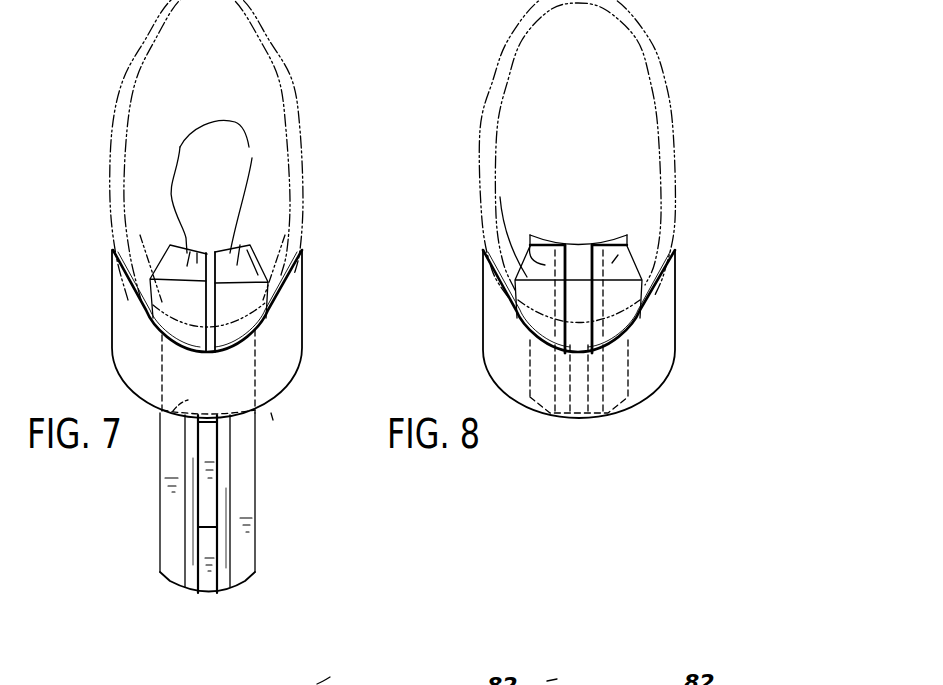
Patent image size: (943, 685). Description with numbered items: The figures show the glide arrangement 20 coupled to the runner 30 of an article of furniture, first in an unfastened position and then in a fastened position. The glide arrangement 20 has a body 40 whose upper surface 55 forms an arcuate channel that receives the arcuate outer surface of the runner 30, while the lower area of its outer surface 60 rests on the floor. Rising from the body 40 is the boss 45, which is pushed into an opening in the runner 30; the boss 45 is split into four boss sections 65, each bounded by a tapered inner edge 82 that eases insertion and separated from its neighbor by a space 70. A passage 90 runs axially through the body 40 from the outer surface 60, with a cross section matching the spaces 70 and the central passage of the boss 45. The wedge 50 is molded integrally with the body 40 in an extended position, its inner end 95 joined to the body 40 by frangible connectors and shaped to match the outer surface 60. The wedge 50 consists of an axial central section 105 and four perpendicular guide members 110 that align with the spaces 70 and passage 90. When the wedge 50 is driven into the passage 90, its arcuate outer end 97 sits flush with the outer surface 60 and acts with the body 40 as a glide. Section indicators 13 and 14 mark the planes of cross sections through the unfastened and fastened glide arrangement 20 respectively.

In FIG. 7, the glide arrangement 20 is at (293, 473).
In FIG. 8, the glide arrangement 20 is at (694, 381).
In FIG. 7, the runner 30 is at (312, 108).
In FIG. 8, the runner 30 is at (653, 41).
In FIG. 7, the body 40 is at (305, 330).
In FIG. 8, the body 40 is at (680, 320).
In FIG. 7, the boss 45 is at (263, 251).
In FIG. 8, the boss 45 is at (643, 251).
In FIG. 7, the wedge 50 is at (257, 546).
In FIG. 8, the wedge 50 is at (643, 402).
In FIG. 7, the upper surface 55 is at (290, 298).
In FIG. 8, the upper surface 55 is at (660, 292).
In FIG. 7, the outer surface 60 is at (290, 396).
In FIG. 8, the outer surface 60 is at (656, 388).
In FIG. 7, the boss sections 65 is at (240, 250).
In FIG. 7, the space 70 is at (194, 301).
In FIG. 7, the tapered inner edge 82 is at (231, 186).
In FIG. 8, the tapered inner edge 82 is at (700, 178).
In FIG. 7, the passage 90 is at (273, 418).
In FIG. 8, the passage 90 is at (528, 360).
In FIG. 7, the inner end 95 is at (199, 392).
In FIG. 8, the inner end 95 is at (530, 246).
In FIG. 7, the outer end 97 is at (240, 587).
In FIG. 8, the outer end 97 is at (533, 421).
In FIG. 7, the central section 105 is at (195, 582).
In FIG. 7, the guide members 110 is at (160, 528).
In FIG. 8, the guide members 110 is at (577, 260).
In FIG. 7, the section line 13- 13 is at (211, 612).
In FIG. 8, the section line 14- 14 is at (578, 282).